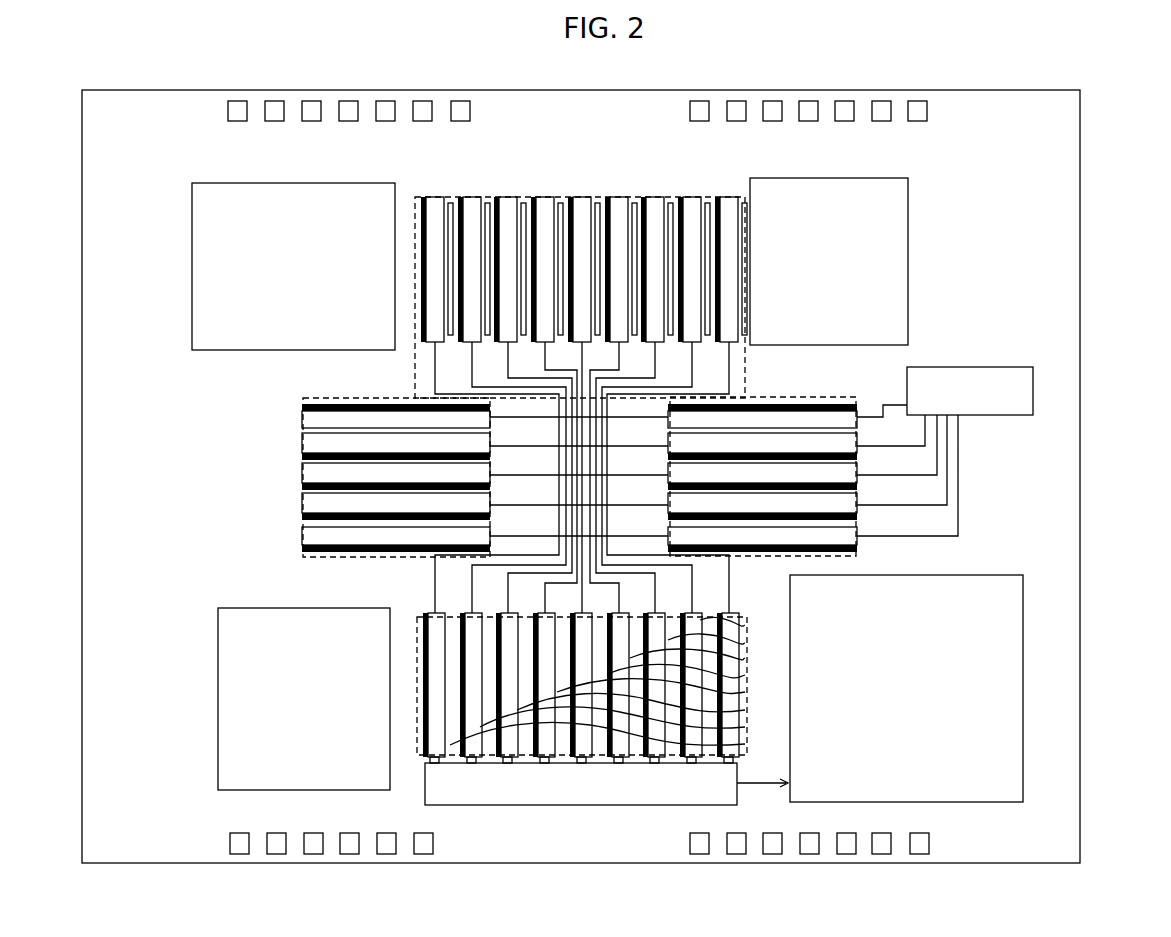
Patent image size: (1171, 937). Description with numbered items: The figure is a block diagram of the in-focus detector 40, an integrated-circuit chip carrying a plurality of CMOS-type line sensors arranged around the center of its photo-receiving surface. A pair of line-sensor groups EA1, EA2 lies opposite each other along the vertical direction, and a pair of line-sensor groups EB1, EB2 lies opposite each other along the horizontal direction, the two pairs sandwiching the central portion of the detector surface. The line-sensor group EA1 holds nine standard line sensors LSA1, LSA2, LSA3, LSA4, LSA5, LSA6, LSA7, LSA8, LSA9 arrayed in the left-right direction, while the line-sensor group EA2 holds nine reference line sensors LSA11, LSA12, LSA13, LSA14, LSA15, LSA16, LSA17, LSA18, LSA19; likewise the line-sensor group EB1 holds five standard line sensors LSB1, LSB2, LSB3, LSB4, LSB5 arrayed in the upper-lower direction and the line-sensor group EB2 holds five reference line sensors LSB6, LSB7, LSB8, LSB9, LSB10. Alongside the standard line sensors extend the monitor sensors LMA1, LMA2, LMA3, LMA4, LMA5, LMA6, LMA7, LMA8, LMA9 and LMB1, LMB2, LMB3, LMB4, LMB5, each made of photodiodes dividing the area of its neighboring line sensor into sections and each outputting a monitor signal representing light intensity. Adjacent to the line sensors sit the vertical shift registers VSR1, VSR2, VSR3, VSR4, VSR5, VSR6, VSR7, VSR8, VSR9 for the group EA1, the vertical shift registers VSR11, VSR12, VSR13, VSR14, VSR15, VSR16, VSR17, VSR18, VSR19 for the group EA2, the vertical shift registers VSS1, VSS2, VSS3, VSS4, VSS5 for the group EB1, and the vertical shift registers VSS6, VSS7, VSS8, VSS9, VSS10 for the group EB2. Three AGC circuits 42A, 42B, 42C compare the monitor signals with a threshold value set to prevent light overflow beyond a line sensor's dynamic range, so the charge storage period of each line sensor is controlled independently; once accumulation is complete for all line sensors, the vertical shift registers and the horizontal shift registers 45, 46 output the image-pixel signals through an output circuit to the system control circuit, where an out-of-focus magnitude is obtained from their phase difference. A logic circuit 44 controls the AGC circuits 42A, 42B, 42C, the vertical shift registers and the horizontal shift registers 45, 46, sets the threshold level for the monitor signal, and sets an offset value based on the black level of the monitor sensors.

The in-focus detector 40 is at (1110, 130).
The AGC circuit 42A is at (192, 268).
The AGC circuit 42B is at (908, 268).
The AGC circuit 42C is at (218, 700).
The logic circuit 44 is at (1023, 688).
The horizontal shift register 45 is at (972, 367).
The horizontal shift register 46 is at (578, 806).
The line-sensor group EA1 is at (413, 322).
The line-sensor group EA2 is at (415, 742).
The line-sensor group EB1 is at (350, 396).
The line-sensor group EB2 is at (814, 395).
The vertical shift register VSR1 is at (428, 197).
The vertical shift register VSR2 is at (464, 197).
The vertical shift register VSR3 is at (503, 197).
The vertical shift register VSR4 is at (540, 197).
The vertical shift register VSR5 is at (577, 197).
The vertical shift register VSR6 is at (614, 197).
The vertical shift register VSR7 is at (650, 197).
The vertical shift register VSR8 is at (689, 197).
The vertical shift register VSR9 is at (736, 197).
The vertical shift register VSR11 is at (432, 613).
The vertical shift register VSR12 is at (469, 613).
The vertical shift register VSR13 is at (505, 613).
The vertical shift register VSR14 is at (542, 613).
The vertical shift register VSR15 is at (579, 613).
The vertical shift register VSR16 is at (616, 613).
The vertical shift register VSR17 is at (652, 613).
The vertical shift register VSR18 is at (689, 613).
The vertical shift register VSR19 is at (732, 613).
The line sensor LSA1 is at (426, 197).
The line sensor LSA2 is at (483, 197).
The line sensor LSA3 is at (521, 197).
The line sensor LSA4 is at (555, 197).
The line sensor LSA5 is at (593, 197).
The line sensor LSA6 is at (631, 197).
The line sensor LSA7 is at (666, 197).
The line sensor LSA8 is at (705, 197).
The line sensor LSA9 is at (725, 197).
The line sensor LSA11 is at (745, 743).
The line sensor LSA12 is at (745, 727).
The line sensor LSA13 is at (745, 710).
The line sensor LSA14 is at (745, 692).
The line sensor LSA15 is at (745, 675).
The line sensor LSA16 is at (745, 658).
The line sensor LSA17 is at (745, 643).
The line sensor LSA18 is at (745, 625).
The line sensor LSA19 is at (718, 613).
The monitor sensor LMA1 is at (497, 477).
The monitor sensor LMA2 is at (519, 477).
The monitor sensor LMA3 is at (540, 477).
The monitor sensor LMA4 is at (562, 477).
The monitor sensor LMA5 is at (599, 477).
The monitor sensor LMA6 is at (622, 477).
The monitor sensor LMA7 is at (643, 477).
The monitor sensor LMA8 is at (695, 347).
The monitor sensor LMA9 is at (732, 347).
The monitor sensor LMB1 is at (492, 420).
The monitor sensor LMB2 is at (492, 448).
The monitor sensor LMB3 is at (492, 477).
The monitor sensor LMB4 is at (492, 507).
The monitor sensor LMB5 is at (492, 538).
The line sensor LSB1 is at (302, 420).
The line sensor LSB2 is at (302, 443).
The line sensor LSB3 is at (302, 473).
The line sensor LSB4 is at (302, 503).
The line sensor LSB5 is at (302, 536).
The line sensor LSB6 is at (857, 422).
The line sensor LSB7 is at (668, 442).
The line sensor LSB8 is at (668, 473).
The line sensor LSB9 is at (668, 503).
The line sensor LSB10 is at (668, 536).
The vertical shift register VSS1 is at (302, 408).
The vertical shift register VSS2 is at (302, 457).
The vertical shift register VSS3 is at (302, 487).
The vertical shift register VSS4 is at (302, 517).
The vertical shift register VSS5 is at (302, 548).
The vertical shift register VSS6 is at (858, 404).
The vertical shift register VSS7 is at (857, 457).
The vertical shift register VSS8 is at (857, 487).
The vertical shift register VSS9 is at (857, 517).
The vertical shift register VSS10 is at (857, 549).